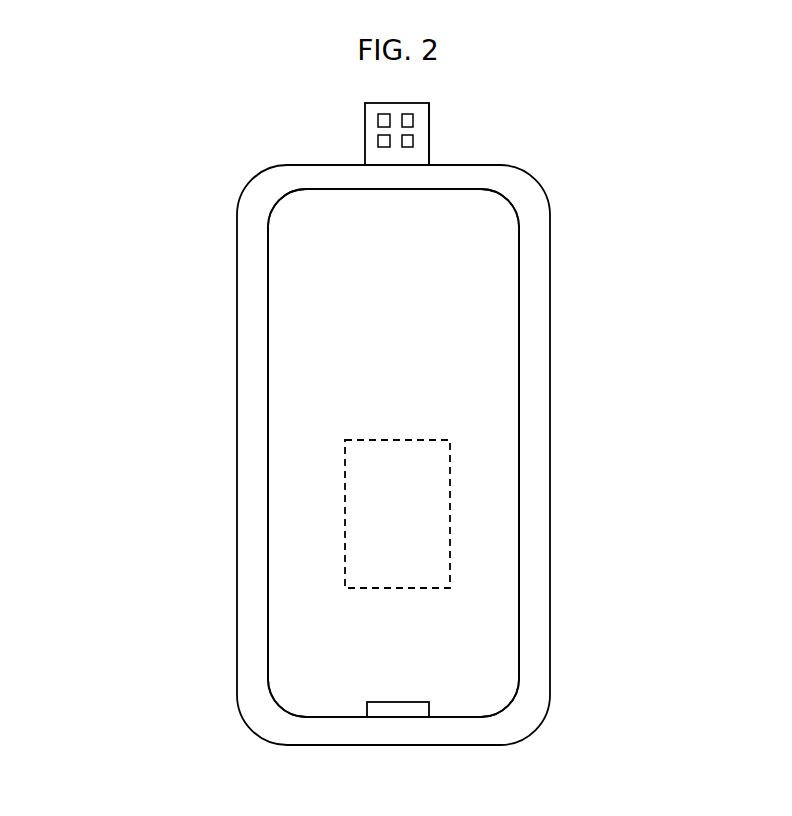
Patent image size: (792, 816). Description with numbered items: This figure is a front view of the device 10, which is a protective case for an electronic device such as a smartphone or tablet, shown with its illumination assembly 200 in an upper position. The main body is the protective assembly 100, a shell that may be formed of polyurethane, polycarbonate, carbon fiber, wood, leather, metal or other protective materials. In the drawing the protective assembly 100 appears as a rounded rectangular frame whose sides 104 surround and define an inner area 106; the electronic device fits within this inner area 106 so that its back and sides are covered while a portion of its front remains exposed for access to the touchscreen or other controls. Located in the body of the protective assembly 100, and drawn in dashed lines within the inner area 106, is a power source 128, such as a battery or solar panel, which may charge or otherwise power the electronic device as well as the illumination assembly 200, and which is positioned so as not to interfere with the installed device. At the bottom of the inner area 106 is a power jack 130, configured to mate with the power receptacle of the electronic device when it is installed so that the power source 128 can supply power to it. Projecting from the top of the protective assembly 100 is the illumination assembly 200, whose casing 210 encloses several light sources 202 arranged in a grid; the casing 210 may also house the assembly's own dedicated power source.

The device 10 is at (659, 170).
The protective assembly 100 is at (242, 192).
The sides 104 is at (253, 403).
The inner area 106 is at (380, 341).
The power source 128 is at (393, 515).
The power jack 130 is at (408, 702).
The illumination assembly 200 is at (330, 125).
The light sources 202 is at (383, 113).
The casing 210 is at (430, 130).